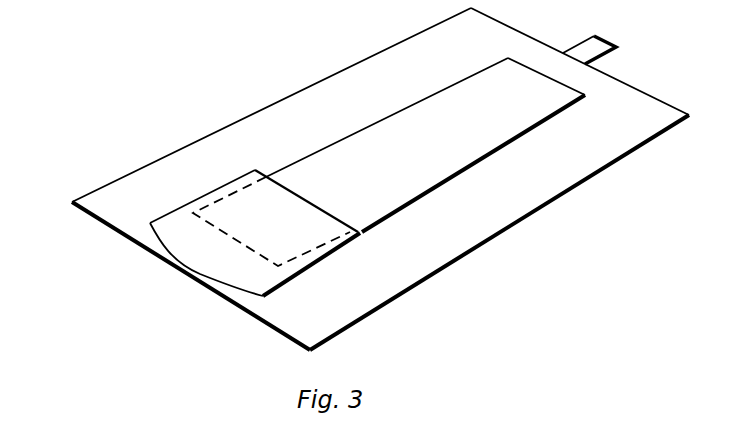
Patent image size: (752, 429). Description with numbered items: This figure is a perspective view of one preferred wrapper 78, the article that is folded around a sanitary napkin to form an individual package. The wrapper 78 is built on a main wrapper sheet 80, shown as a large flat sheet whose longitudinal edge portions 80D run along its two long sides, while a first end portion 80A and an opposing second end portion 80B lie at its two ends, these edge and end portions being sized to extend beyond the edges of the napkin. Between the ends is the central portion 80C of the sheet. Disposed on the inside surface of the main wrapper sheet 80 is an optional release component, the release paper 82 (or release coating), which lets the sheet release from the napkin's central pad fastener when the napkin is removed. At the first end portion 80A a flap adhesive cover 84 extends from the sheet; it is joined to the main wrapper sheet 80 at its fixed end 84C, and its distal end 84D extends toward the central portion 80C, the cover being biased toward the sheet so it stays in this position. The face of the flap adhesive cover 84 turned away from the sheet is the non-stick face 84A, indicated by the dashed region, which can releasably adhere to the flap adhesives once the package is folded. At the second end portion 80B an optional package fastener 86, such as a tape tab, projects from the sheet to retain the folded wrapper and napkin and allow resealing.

The wrapper 78 is at (88, 162).
The main wrapper sheet 80 is at (299, 140).
The first end portion 80A is at (285, 318).
The second end portion 80B is at (496, 35).
The central portion 80C is at (437, 225).
The longitudinal edge portions 80D is at (363, 62).
The release paper 82 is at (433, 162).
The flap adhesive cover 84 is at (253, 285).
The non-stick face 84A is at (231, 267).
The fixed end 84C is at (157, 245).
The distal end 84D is at (302, 193).
The package fastener 86 is at (594, 45).